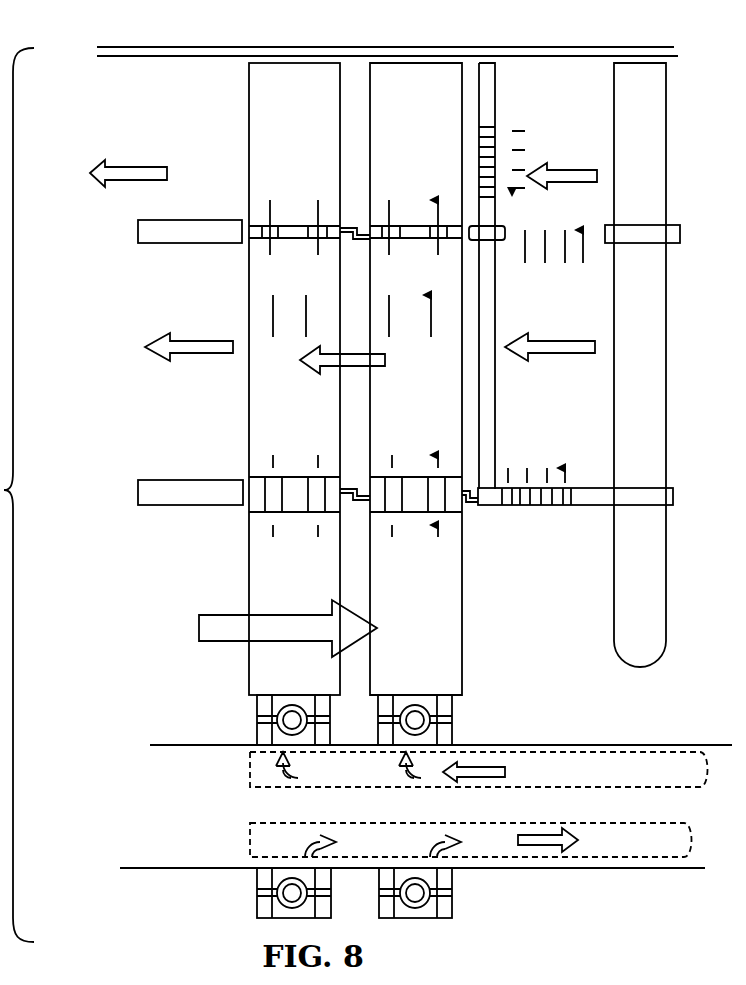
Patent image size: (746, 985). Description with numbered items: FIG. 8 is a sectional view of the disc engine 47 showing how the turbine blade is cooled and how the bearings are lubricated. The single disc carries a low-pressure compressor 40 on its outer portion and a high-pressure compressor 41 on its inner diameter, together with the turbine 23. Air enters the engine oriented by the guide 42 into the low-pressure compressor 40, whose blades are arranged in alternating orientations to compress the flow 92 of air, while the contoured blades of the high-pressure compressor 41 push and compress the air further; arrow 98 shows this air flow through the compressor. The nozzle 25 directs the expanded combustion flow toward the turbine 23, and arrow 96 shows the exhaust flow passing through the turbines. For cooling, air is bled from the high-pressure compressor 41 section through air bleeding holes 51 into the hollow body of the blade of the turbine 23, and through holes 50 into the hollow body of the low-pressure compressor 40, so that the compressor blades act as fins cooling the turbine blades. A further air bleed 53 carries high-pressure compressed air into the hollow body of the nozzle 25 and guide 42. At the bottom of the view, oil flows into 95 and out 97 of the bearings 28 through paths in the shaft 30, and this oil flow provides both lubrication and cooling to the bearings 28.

The disc engine 47 is at (405, 59).
The low-pressure compressor 40 is at (423, 143).
The high-pressure compressor 41 is at (423, 575).
The turbine 23 is at (316, 282).
The guide 42 is at (617, 148).
The nozzle 25 is at (617, 400).
The holes 50 is at (268, 247).
The air bleeding holes 51 is at (272, 528).
The air bleed 53 is at (537, 507).
The flow of air 92 is at (143, 173).
The exhaust flow 96 is at (173, 352).
The air flow through the compressor 98 is at (210, 643).
The bearings 28 is at (257, 728).
The shaft 30 is at (183, 868).
The oil flow in 95 is at (505, 775).
The oil flow out 97 is at (570, 845).